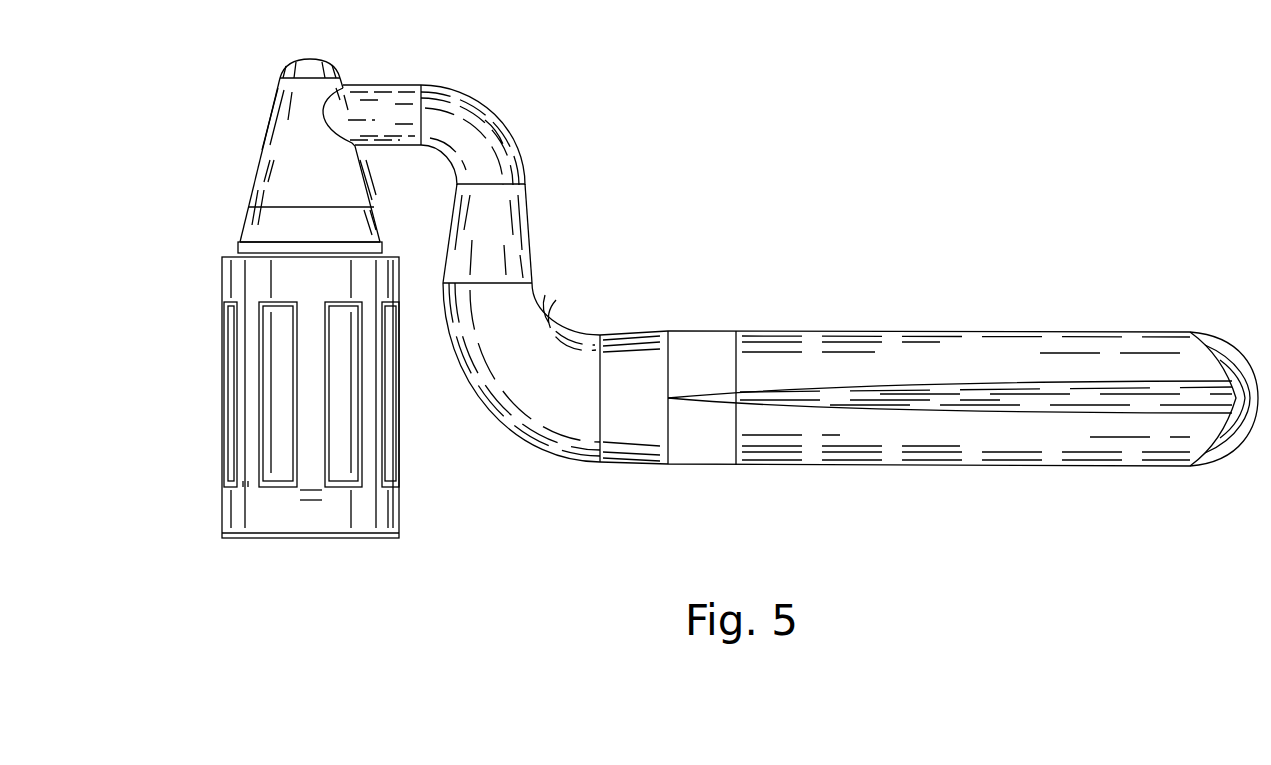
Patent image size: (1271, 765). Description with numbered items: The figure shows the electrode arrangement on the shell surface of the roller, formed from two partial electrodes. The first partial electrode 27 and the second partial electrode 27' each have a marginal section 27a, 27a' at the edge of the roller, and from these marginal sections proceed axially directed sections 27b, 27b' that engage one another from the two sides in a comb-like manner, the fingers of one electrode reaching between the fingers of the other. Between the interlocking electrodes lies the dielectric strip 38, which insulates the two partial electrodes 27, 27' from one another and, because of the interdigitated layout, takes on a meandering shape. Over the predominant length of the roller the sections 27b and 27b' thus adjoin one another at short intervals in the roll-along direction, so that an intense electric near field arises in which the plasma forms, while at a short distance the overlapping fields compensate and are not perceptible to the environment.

The first partial electrode 27 is at (254, 388).
The marginal section 27a is at (272, 163).
The marginal section 27a' is at (317, 560).
The second partial electrode 27' is at (275, 565).
The axially directed sections 27b is at (257, 394).
The axially directed sections 27b' is at (255, 409).
The dielectric strip 38 is at (250, 493).